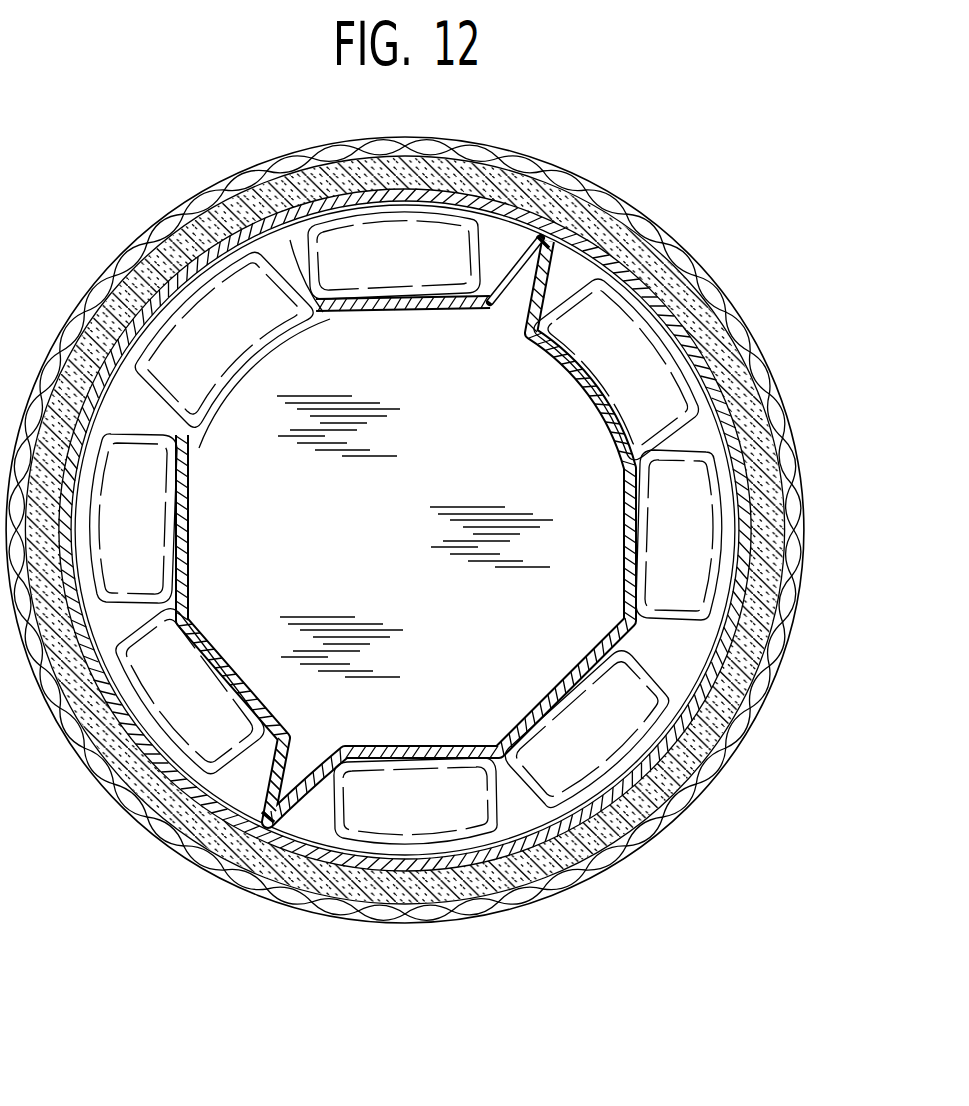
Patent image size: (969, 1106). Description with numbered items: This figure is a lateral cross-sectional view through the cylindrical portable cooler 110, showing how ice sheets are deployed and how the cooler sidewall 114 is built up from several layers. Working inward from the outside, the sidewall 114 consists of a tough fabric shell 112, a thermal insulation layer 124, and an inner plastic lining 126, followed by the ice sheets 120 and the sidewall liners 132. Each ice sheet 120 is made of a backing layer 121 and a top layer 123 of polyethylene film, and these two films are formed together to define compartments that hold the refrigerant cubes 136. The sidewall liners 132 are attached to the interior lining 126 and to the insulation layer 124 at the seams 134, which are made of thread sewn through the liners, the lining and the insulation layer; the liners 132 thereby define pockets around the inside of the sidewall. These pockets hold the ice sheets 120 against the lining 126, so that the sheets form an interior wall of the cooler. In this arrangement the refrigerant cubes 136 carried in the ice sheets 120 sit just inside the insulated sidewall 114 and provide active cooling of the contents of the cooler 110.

The cooler 110 is at (731, 170).
The fabric shell 112 is at (158, 222).
The cooler sidewall 114 is at (96, 284).
The ice sheets 120 is at (660, 553).
The backing layer 121 is at (323, 312).
The top layer 123 is at (486, 306).
The thermal insulation layer 124 is at (238, 200).
The inner plastic lining 126 is at (322, 204).
The sidewall liners 132 is at (608, 437).
The seams 134 is at (590, 212).
The refrigerant cubes 136 is at (613, 756).